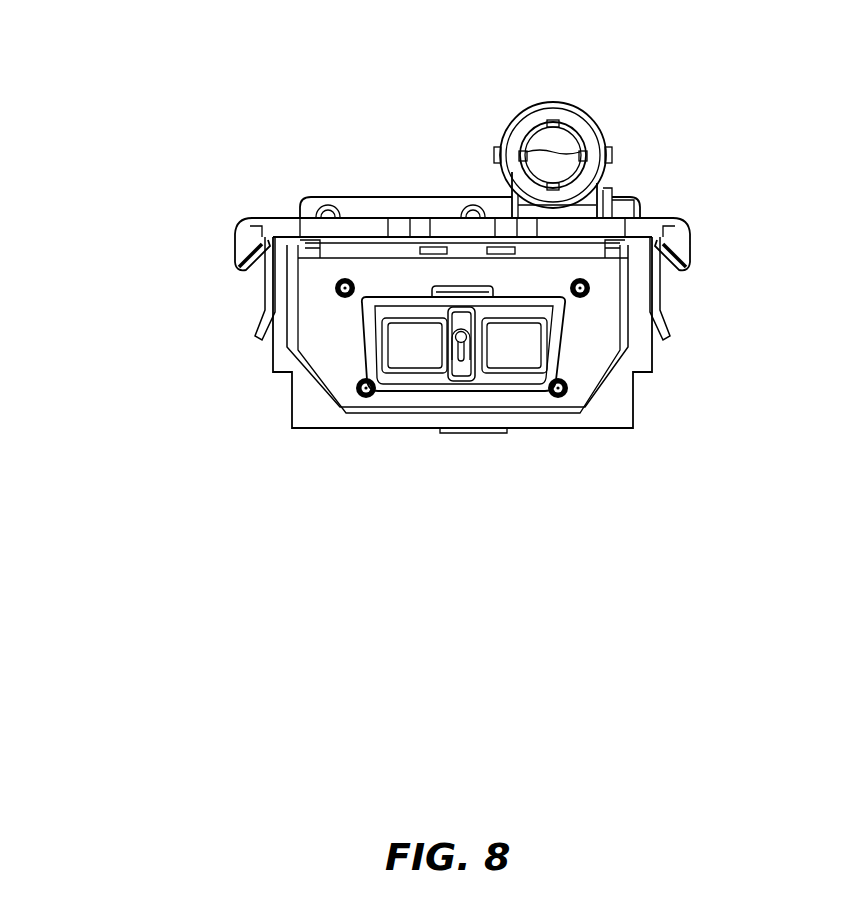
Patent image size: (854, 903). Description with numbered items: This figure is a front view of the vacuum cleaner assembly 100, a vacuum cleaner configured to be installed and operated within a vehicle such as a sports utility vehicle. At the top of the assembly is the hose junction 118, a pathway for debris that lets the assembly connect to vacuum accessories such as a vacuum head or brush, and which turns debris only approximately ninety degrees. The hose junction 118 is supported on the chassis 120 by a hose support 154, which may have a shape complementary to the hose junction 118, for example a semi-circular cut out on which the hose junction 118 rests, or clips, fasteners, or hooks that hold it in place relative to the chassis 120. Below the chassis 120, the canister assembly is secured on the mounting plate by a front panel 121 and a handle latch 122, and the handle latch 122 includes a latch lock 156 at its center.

The vacuum cleaner assembly 100 is at (114, 82).
The hose junction 118 is at (598, 122).
The hose support 154 is at (585, 193).
The chassis 120 is at (325, 225).
The front panel 121 is at (477, 295).
The handle latch 122 is at (520, 315).
The latch lock 156 is at (465, 375).